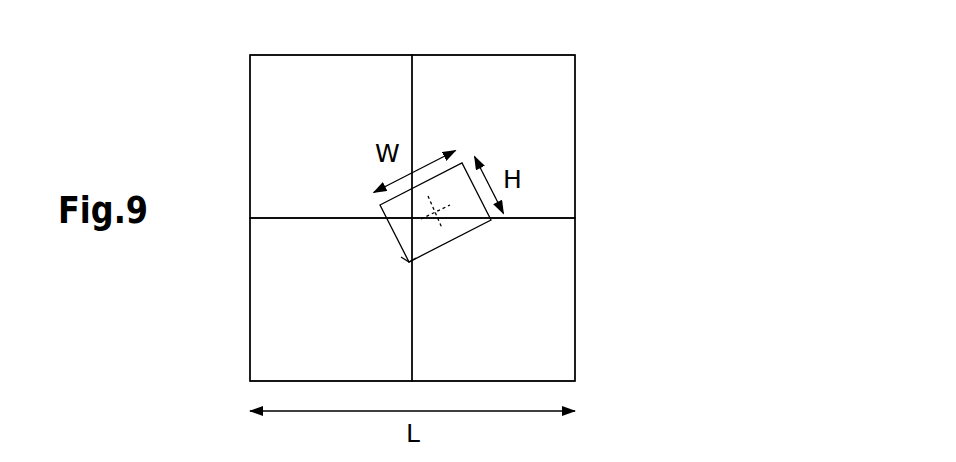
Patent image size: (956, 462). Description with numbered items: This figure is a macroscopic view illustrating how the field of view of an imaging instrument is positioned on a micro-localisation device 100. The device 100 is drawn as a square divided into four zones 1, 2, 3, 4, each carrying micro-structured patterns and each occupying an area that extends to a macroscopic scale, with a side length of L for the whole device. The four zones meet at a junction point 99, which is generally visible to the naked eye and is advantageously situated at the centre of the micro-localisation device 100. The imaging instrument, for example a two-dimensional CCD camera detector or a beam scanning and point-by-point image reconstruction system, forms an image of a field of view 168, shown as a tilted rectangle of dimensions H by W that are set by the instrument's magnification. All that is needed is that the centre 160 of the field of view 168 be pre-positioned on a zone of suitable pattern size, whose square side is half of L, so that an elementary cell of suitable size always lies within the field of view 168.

The micro-localisation device 100 is at (315, 52).
The zone 1 is at (483, 68).
The zone 2 is at (553, 330).
The zone 3 is at (278, 318).
The zone 4 is at (265, 100).
The field of view 168 is at (462, 163).
The centre of the field of view 160 is at (452, 207).
The junction point 99 is at (407, 262).